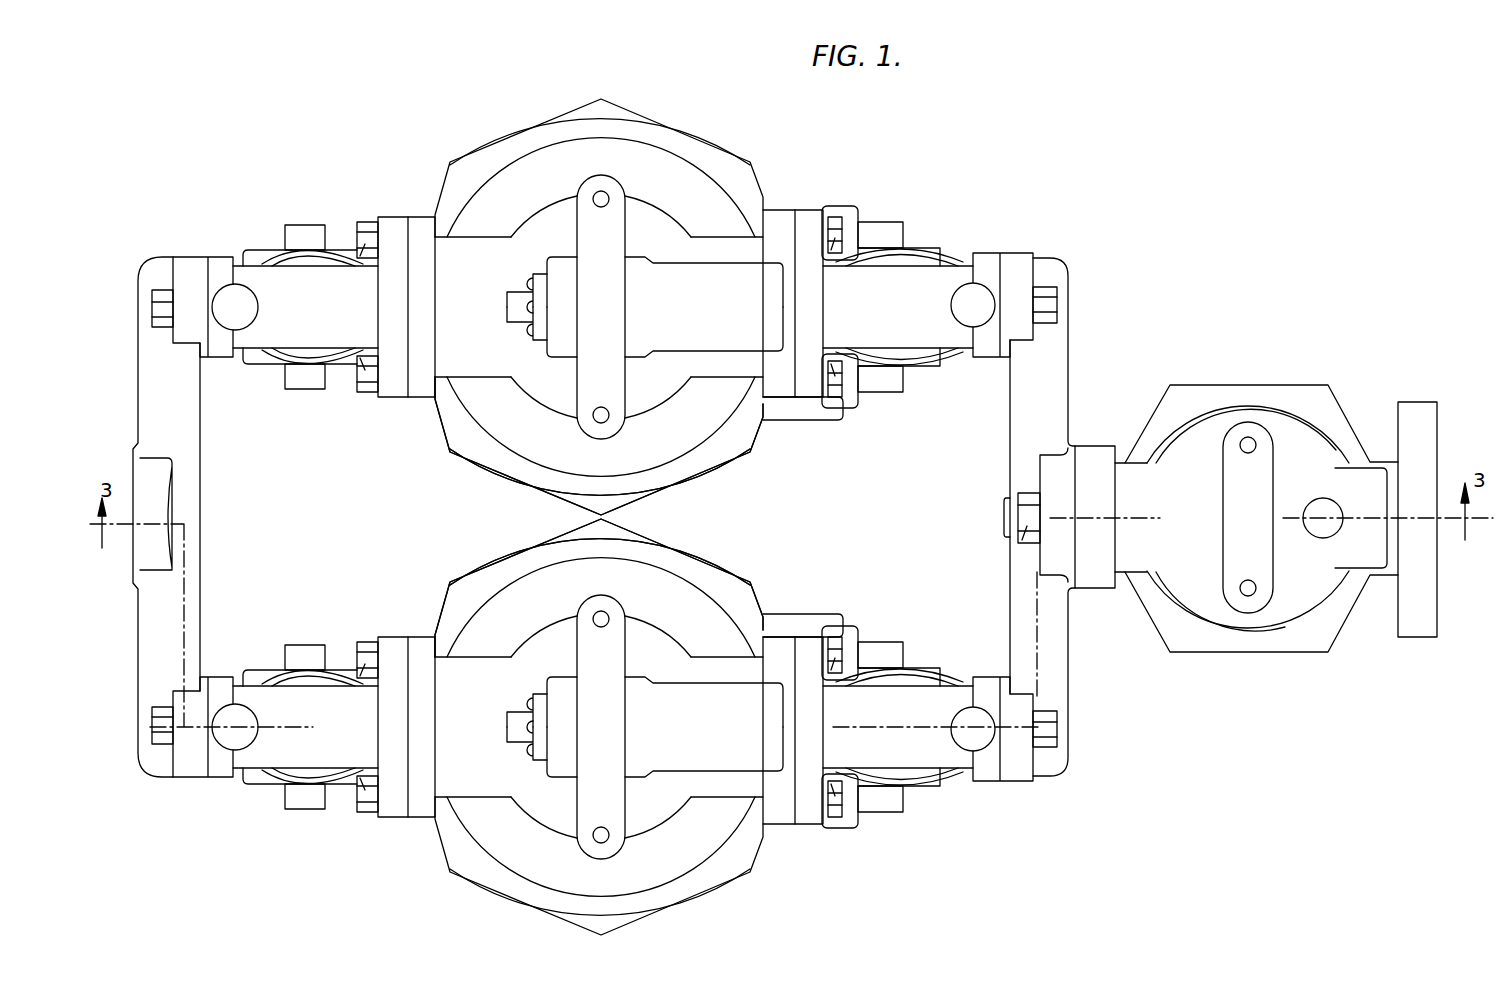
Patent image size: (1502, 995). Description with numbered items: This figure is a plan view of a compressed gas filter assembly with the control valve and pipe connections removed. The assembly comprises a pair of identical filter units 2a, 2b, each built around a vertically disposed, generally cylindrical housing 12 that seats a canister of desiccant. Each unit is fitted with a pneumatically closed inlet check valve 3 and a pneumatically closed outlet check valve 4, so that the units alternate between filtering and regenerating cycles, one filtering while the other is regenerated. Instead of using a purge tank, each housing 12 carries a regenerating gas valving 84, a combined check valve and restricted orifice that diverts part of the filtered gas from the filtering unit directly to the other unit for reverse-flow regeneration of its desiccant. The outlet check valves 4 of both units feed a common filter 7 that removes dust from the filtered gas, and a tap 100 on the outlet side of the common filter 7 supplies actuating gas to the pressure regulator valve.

The filter unit 2a is at (697, 137).
The filter unit 2b is at (697, 896).
The inlet check valve 3 is at (262, 370).
The outlet check valve 4 is at (885, 392).
The common filter 7 is at (1259, 653).
The housing 12 is at (674, 546).
The regenerating gas valving 84 is at (508, 321).
The tap 100 is at (1323, 497).